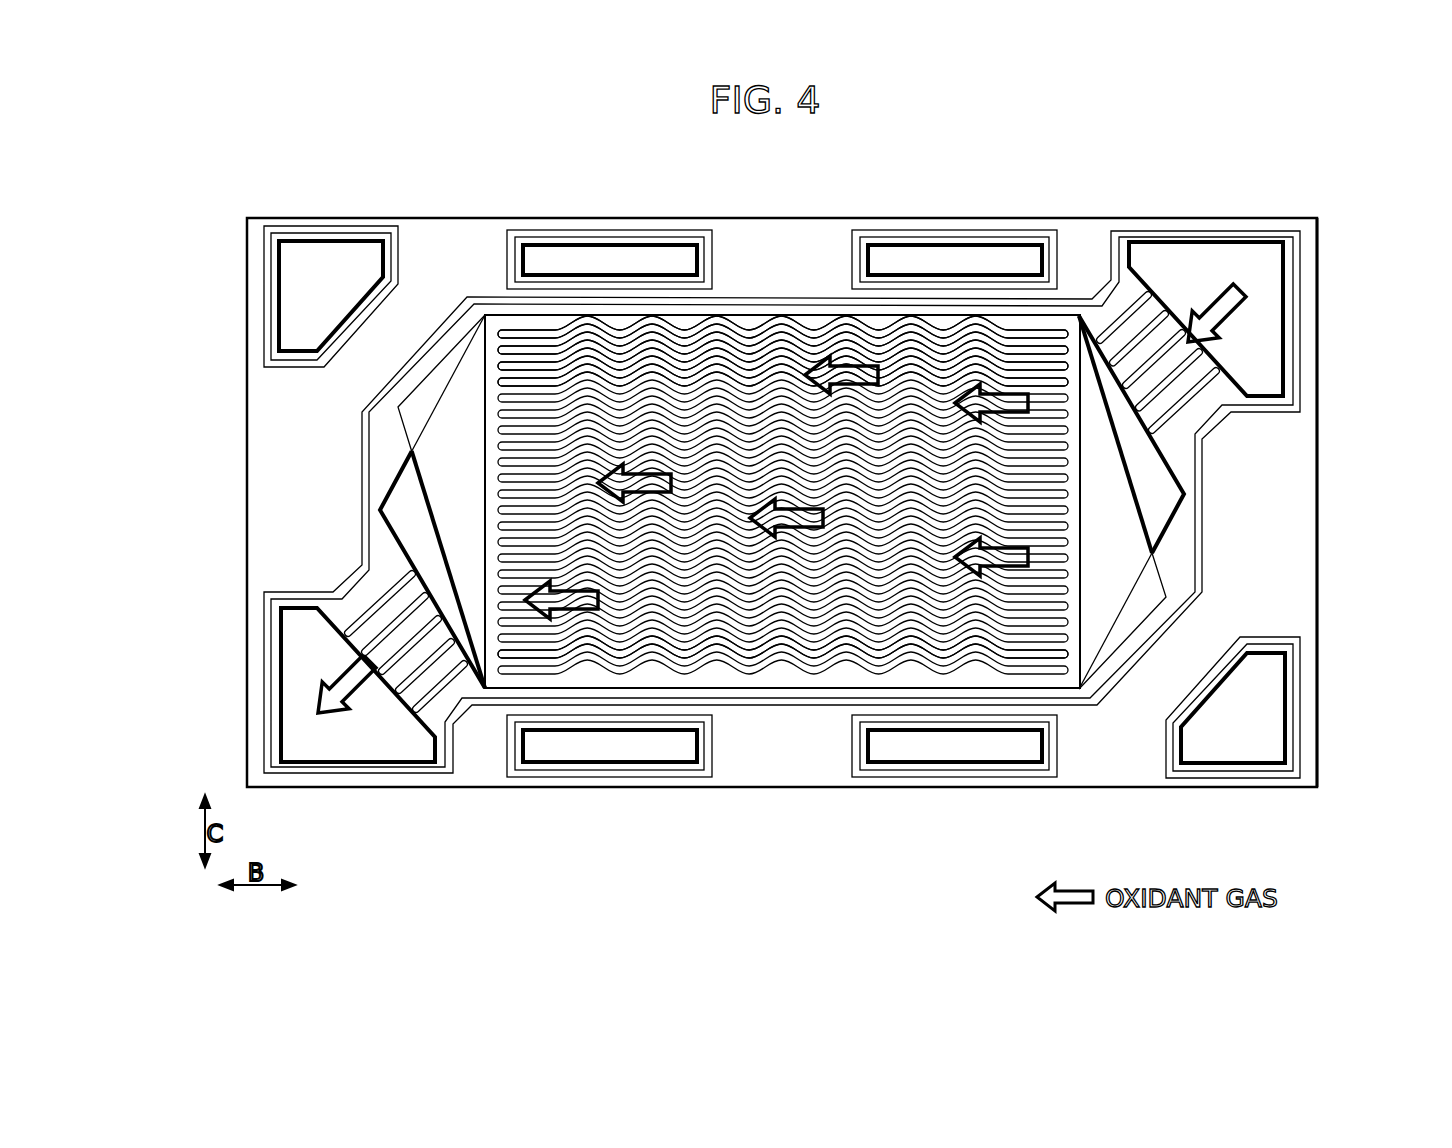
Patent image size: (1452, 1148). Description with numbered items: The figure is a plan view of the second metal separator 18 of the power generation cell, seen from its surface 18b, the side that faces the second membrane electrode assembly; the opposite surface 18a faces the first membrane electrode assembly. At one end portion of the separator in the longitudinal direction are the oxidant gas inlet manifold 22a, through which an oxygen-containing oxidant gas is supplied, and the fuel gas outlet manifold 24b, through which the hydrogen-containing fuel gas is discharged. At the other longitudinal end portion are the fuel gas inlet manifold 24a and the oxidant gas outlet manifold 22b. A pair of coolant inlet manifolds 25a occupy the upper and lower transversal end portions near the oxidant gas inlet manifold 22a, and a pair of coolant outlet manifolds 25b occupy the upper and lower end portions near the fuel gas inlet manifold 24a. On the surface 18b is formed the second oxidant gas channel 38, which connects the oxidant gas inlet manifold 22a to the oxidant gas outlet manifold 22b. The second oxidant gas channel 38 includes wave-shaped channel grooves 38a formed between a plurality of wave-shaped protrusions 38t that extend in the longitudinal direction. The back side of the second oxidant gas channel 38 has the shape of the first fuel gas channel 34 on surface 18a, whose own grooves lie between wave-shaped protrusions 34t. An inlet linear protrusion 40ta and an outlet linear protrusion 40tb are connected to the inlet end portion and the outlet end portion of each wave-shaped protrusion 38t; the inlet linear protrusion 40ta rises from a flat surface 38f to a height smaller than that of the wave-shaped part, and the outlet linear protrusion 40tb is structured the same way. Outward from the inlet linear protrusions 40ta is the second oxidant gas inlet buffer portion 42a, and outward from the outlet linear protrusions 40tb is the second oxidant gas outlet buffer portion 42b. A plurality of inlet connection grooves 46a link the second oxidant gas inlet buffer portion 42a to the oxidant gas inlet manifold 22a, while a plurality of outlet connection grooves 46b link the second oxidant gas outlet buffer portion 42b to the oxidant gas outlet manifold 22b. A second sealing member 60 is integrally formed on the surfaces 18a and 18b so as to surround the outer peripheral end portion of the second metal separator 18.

The second metal separator 18 is at (437, 160).
The surface of the second metal separator 18a is at (1285, 535).
The surface of the second metal separator 18b is at (1303, 553).
The oxidant gas inlet manifold 22a is at (1198, 262).
The oxidant gas outlet manifold 22b is at (318, 728).
The fuel gas inlet manifold 24a is at (316, 262).
The fuel gas outlet manifold 24b is at (1228, 737).
The coolant inlet manifolds 25a is at (920, 258).
The coolant outlet manifolds 25b is at (597, 258).
The first fuel gas channel 34 is at (768, 655).
The wave-shaped protrusions 34t is at (823, 355).
The second oxidant gas channel 38 is at (726, 326).
The wave-shaped channel grooves 38a is at (658, 348).
The flat surface 38f is at (545, 323).
The wave-shaped protrusions 38t is at (781, 420).
The inlet linear protrusion 40ta is at (1043, 365).
The outlet linear protrusion 40tb is at (546, 640).
The second oxidant gas inlet buffer portion 42a is at (1110, 492).
The second oxidant gas outlet buffer portion 42b is at (447, 477).
The inlet connection grooves 46a is at (1123, 337).
The outlet connection grooves 46b is at (442, 676).
The second sealing member 60 is at (693, 790).